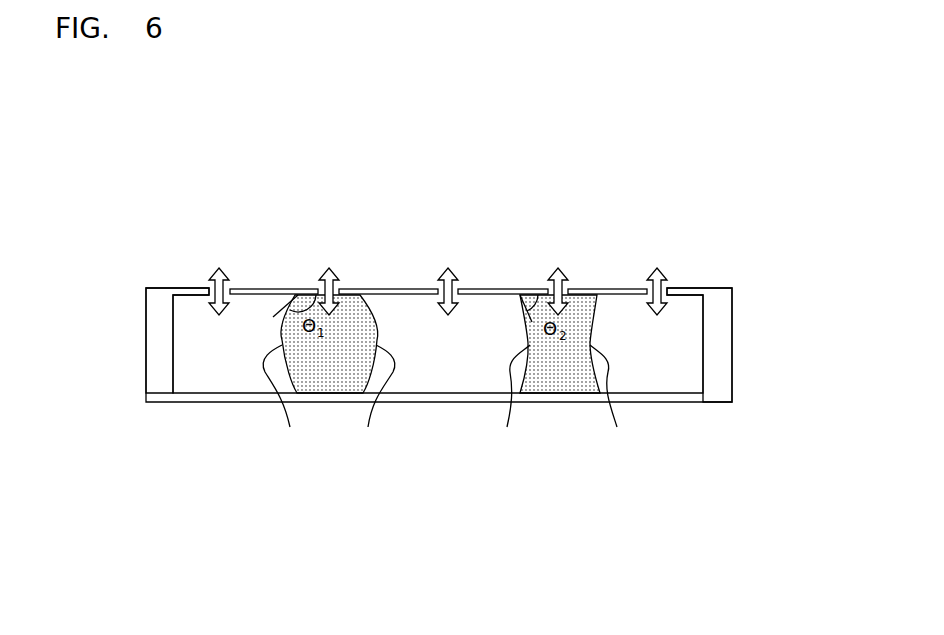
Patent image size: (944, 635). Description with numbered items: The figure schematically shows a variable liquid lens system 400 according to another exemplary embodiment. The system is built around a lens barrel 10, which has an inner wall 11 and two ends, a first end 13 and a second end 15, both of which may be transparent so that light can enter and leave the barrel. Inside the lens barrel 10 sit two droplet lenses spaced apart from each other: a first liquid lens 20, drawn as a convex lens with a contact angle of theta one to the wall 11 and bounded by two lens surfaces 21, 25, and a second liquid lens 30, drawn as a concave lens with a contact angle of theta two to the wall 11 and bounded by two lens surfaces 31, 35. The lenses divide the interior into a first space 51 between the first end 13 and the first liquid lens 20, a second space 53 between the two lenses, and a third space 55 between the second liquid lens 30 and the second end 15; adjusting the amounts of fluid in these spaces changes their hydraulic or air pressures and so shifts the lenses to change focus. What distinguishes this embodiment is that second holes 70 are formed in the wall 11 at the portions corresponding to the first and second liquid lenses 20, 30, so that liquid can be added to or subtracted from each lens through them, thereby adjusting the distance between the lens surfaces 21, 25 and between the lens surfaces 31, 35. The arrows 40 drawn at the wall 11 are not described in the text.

The variable liquid lens system 400 is at (763, 178).
The lens barrel 10 is at (738, 281).
The wall 11 is at (400, 295).
The first end 13 is at (155, 348).
The second end 15 is at (725, 348).
The first liquid lens 20 is at (327, 383).
The lens surface 21 is at (283, 397).
The lens surface 25 is at (376, 397).
The second liquid lens 30 is at (562, 383).
The lens surface 31 is at (513, 397).
The lens surface 35 is at (612, 397).
The movable electrode arrow 40 is at (230, 288).
The second hole 70 is at (340, 288).
The first space 51 is at (239, 356).
The second space 53 is at (461, 356).
The third space 55 is at (669, 356).